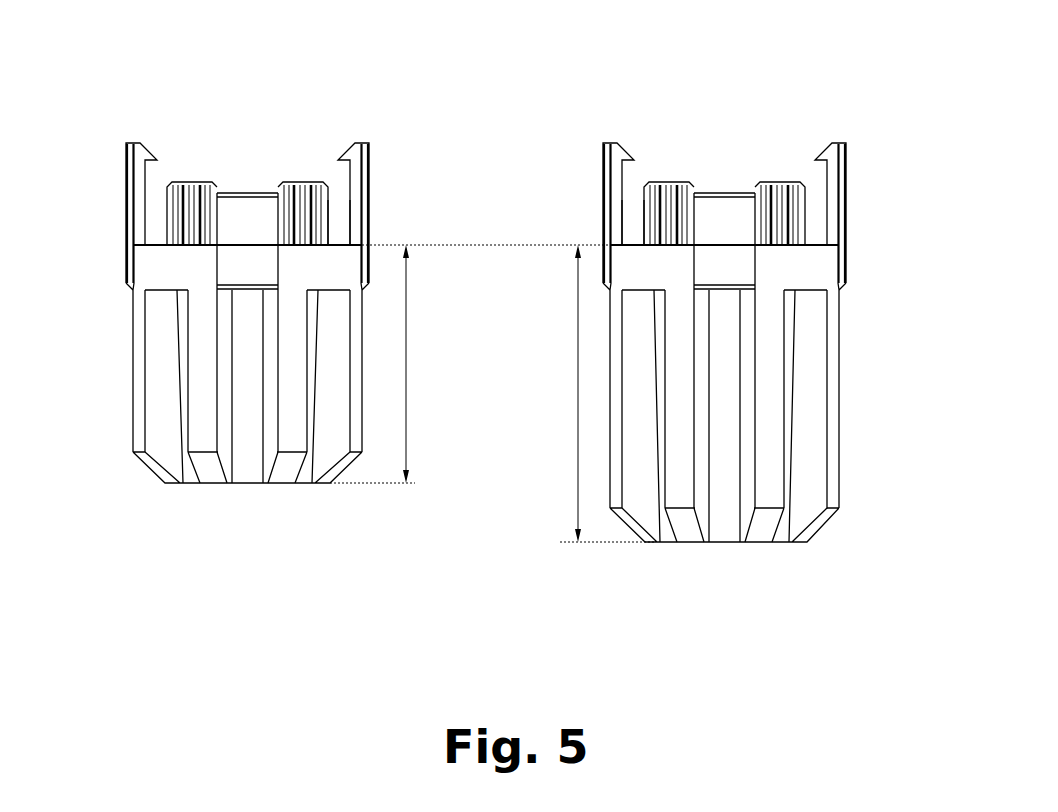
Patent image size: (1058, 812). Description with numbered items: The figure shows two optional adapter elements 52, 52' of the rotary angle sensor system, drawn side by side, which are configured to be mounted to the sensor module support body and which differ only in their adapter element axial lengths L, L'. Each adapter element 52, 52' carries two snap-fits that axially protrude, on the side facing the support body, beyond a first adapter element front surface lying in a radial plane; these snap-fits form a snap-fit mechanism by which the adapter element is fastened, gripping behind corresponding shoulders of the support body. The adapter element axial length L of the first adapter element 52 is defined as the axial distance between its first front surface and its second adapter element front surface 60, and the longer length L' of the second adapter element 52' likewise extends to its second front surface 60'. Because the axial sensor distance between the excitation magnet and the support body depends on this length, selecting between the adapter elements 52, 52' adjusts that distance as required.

The adapter element 52 is at (236, 290).
The adapter element 52' is at (762, 332).
The second adapter element front surface 60 is at (247, 513).
The second adapter element front surface 60' is at (713, 571).
The adapter element axial length L is at (471, 364).
The adapter element axial length L' is at (581, 393).